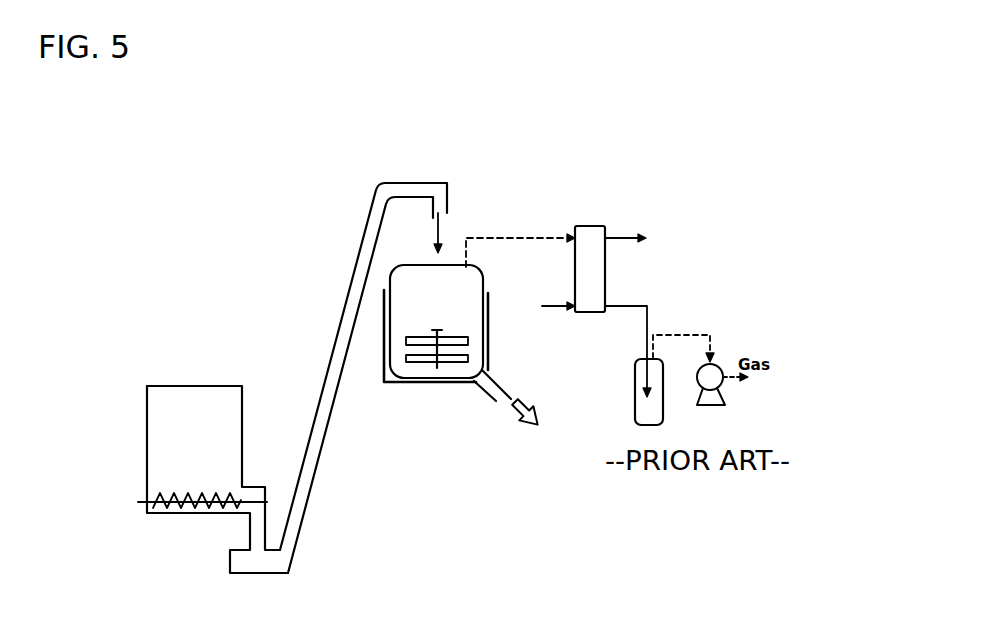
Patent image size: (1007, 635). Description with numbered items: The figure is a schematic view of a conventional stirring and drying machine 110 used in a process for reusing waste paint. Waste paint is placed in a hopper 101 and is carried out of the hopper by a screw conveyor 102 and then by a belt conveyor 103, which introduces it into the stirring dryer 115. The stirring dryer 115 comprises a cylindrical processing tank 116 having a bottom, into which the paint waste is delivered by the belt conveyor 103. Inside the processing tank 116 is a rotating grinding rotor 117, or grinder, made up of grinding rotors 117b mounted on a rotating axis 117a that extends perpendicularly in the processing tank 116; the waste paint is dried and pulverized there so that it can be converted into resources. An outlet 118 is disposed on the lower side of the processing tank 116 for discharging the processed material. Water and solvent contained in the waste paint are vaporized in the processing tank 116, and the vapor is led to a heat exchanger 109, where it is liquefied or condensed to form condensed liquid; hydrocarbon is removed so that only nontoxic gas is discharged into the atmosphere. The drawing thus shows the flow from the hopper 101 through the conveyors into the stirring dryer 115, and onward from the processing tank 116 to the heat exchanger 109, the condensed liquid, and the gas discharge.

The hopper 101 is at (190, 397).
The screw conveyor 102 is at (180, 514).
The belt conveyor 103 is at (328, 370).
The heat exchanger 109 is at (590, 214).
The stirring and drying machine 110 is at (512, 158).
The stirring dryer 115 is at (417, 386).
The processing tank 116 is at (484, 280).
The rotating grinding rotor 117 is at (463, 396).
The rotating axis 117a is at (443, 376).
The grinding rotors 117b is at (415, 367).
The outlet 118 is at (495, 400).